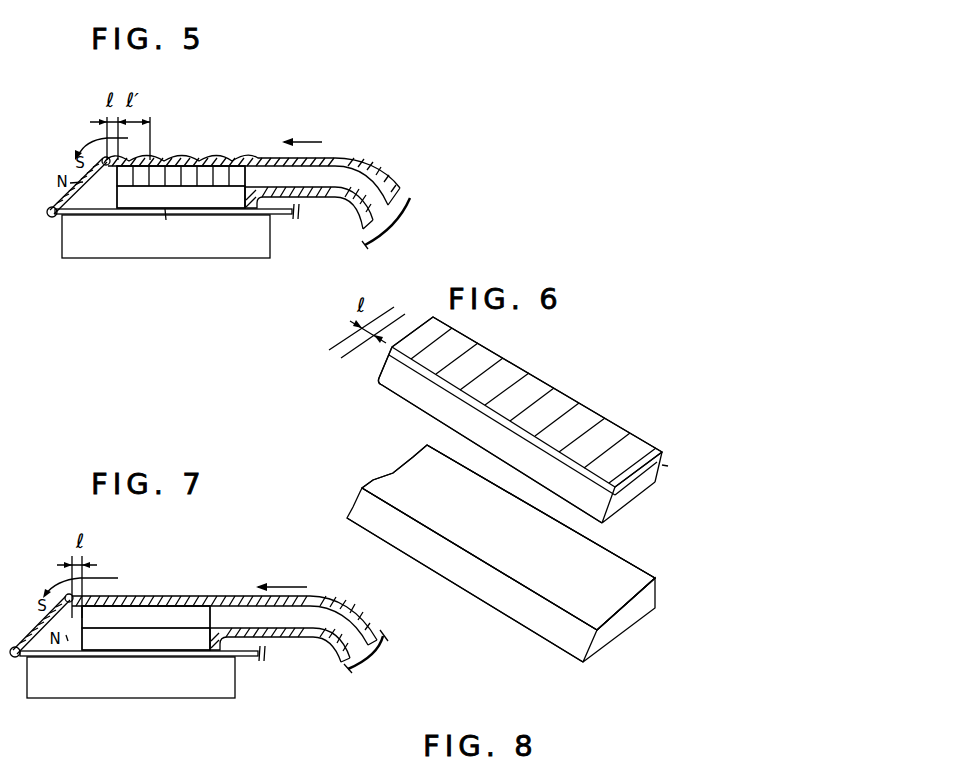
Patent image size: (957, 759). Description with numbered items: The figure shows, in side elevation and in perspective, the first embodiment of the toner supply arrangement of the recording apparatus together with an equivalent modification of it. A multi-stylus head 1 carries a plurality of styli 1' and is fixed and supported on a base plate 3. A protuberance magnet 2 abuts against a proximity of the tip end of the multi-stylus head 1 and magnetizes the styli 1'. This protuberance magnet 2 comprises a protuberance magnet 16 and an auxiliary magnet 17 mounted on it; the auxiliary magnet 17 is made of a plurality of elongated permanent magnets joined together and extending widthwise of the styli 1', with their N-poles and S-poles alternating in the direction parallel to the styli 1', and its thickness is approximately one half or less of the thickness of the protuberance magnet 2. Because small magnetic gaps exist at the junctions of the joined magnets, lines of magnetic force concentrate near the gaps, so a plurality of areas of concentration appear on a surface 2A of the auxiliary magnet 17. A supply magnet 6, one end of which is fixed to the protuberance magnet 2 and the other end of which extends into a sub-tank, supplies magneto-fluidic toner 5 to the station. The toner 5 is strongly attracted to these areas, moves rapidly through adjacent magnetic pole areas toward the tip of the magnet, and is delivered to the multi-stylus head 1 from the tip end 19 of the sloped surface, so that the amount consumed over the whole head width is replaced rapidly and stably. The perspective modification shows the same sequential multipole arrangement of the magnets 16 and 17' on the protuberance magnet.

In FIG. 7, the multi-stylus head 1 is at (142, 690).
In FIG. 5, the styli 1' is at (177, 246).
In FIG. 5, the protuberance magnet 2 is at (238, 98).
In FIG. 7, the protuberance magnet 2 is at (212, 553).
In FIG. 6, the protuberance magnet 2 is at (700, 543).
In FIG. 5, the surface of the auxiliary magnet 2A is at (241, 153).
In FIG. 5, the base plate 3 is at (269, 250).
In FIG. 7, the base plate 3 is at (213, 700).
In FIG. 5, the magneto-fluidic toner 5 is at (398, 195).
In FIG. 7, the magneto-fluidic toner 5 is at (372, 634).
In FIG. 5, the supply magnet 6 is at (368, 181).
In FIG. 7, the supply magnet 6 is at (338, 622).
In FIG. 5, the protuberance magnet 16 is at (170, 156).
In FIG. 7, the protuberance magnet 16 is at (190, 620).
In FIG. 6, the protuberance magnet 16 is at (650, 607).
In FIG. 5, the auxiliary magnet 17 is at (181, 144).
In FIG. 7, the multipole permanent magnet 17' is at (146, 594).
In FIG. 6, the multipole permanent magnet 17' is at (539, 441).
In FIG. 5, the tip end of the sloped surface 19 is at (56, 207).
In FIG. 7, the tip end of the sloped surface 19 is at (60, 621).
In FIG. 6, the tip end of the sloped surface 19 is at (483, 597).